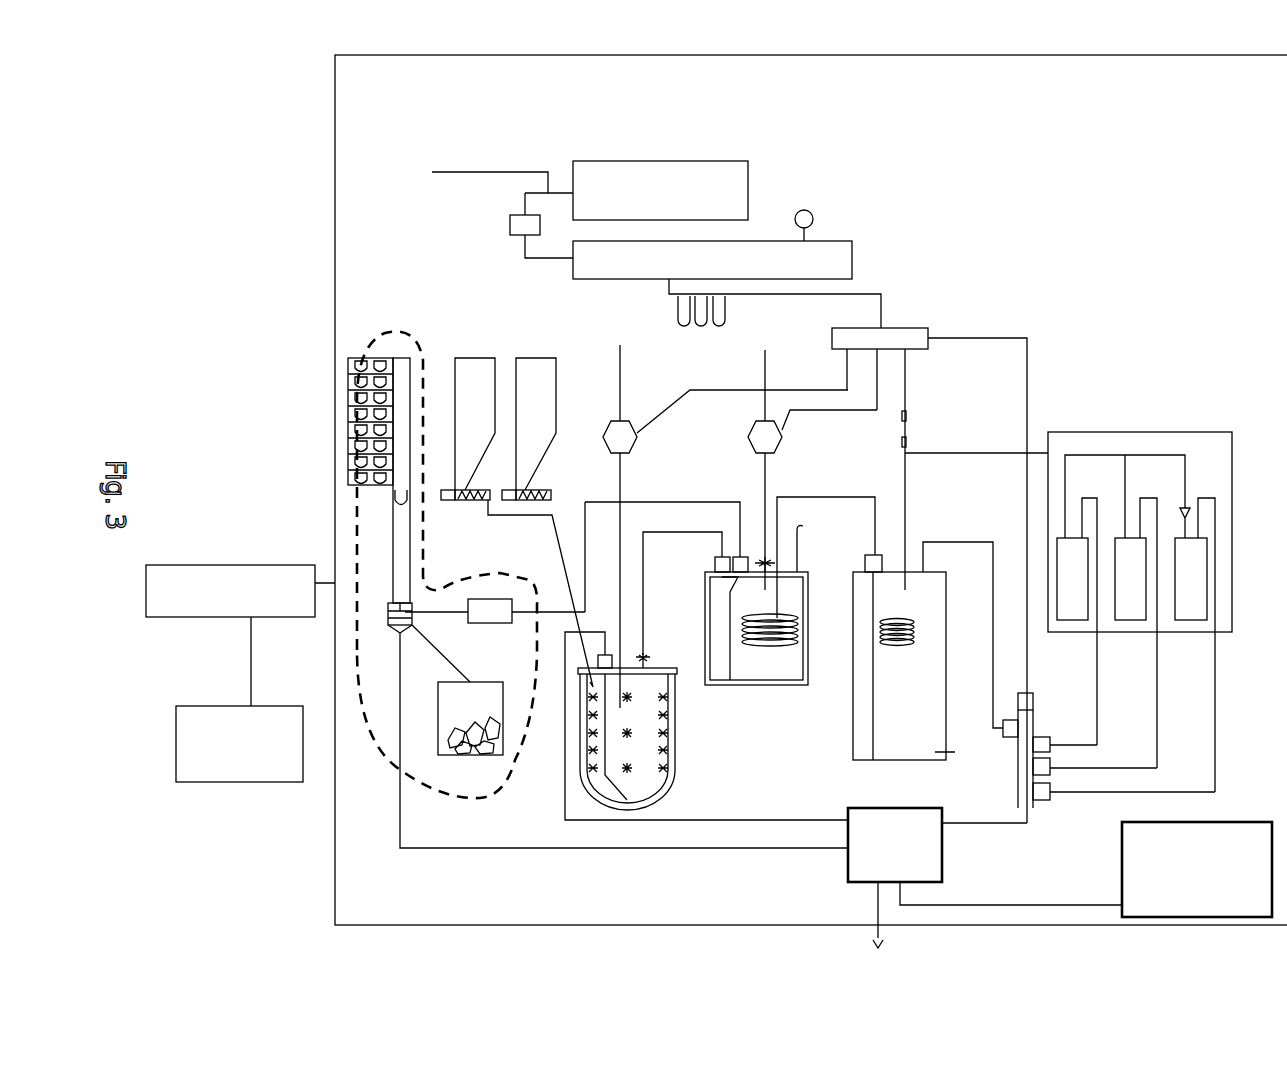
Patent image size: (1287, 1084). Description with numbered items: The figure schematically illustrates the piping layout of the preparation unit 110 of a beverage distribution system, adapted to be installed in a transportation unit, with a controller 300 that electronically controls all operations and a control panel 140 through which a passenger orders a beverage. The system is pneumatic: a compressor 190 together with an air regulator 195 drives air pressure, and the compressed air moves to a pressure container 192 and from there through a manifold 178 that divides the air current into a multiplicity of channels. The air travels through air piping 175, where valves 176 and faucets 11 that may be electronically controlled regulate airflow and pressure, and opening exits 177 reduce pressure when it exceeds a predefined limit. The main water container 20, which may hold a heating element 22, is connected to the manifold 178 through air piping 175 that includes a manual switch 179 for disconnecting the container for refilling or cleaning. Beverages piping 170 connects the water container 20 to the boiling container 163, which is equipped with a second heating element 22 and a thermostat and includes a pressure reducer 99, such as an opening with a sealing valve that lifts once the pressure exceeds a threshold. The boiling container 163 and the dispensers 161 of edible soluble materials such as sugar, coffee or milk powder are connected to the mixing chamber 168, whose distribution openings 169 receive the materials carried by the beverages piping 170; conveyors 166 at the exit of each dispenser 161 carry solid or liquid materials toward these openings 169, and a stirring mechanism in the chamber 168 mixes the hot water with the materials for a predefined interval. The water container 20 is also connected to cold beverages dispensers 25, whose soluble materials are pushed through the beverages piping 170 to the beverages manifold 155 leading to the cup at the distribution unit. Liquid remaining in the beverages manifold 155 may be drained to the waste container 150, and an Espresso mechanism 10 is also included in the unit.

The preparation unit 110 is at (330, 245).
The Espresso mechanism 10 is at (378, 308).
The controller 300 is at (262, 558).
The control panel 140 is at (226, 701).
The air regulator 195 is at (507, 228).
The compressor 190 is at (735, 155).
The pressure container 192 is at (831, 236).
The manifold 178 is at (891, 325).
The opening exits 177 is at (615, 350).
The valves 176 is at (600, 431).
The air piping 175 is at (750, 486).
The manual switch 179 is at (921, 418).
The cold beverages dispensers 25 is at (1071, 535).
The beverages piping 170 is at (685, 496).
The faucets 11 is at (877, 552).
The main water container 20 is at (912, 768).
The heating element 22 is at (922, 651).
The boiling container 163 is at (701, 612).
The pressure reducer 99 is at (808, 536).
The mixing chamber 168 is at (577, 752).
The distribution openings 169 is at (679, 693).
The dispensers 161 is at (478, 352).
The conveyors 166 is at (484, 504).
The beverages manifold 155 is at (950, 866).
The waste container 150 is at (1229, 819).